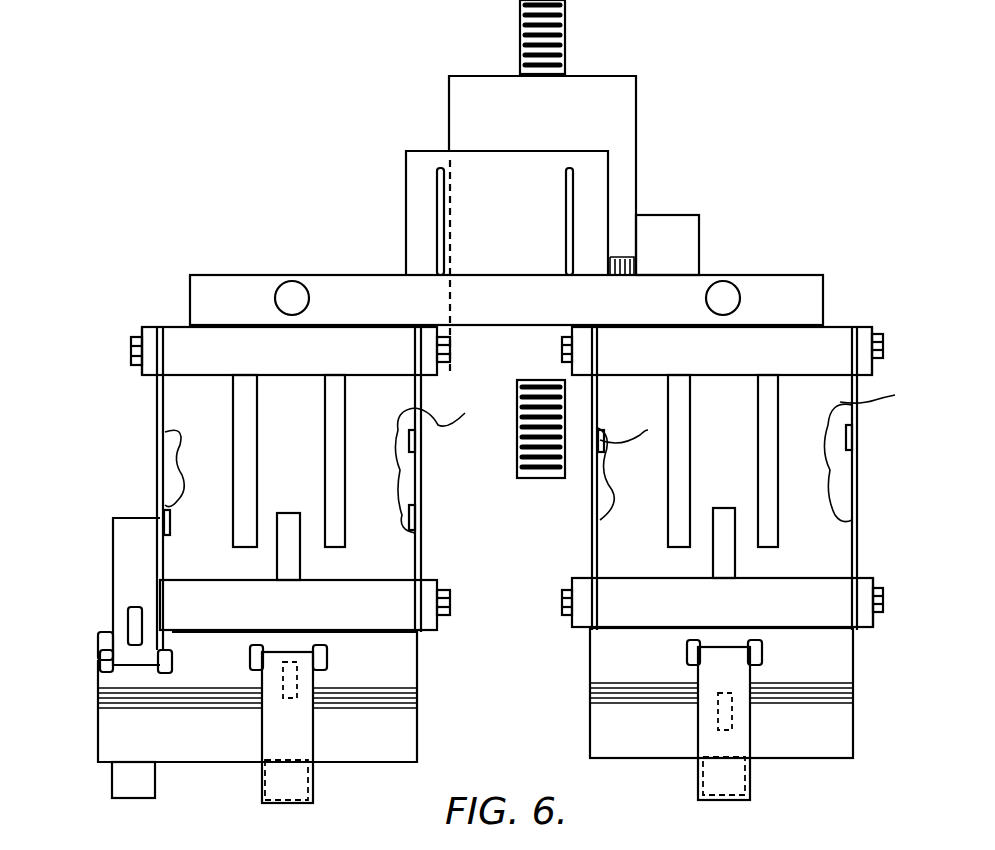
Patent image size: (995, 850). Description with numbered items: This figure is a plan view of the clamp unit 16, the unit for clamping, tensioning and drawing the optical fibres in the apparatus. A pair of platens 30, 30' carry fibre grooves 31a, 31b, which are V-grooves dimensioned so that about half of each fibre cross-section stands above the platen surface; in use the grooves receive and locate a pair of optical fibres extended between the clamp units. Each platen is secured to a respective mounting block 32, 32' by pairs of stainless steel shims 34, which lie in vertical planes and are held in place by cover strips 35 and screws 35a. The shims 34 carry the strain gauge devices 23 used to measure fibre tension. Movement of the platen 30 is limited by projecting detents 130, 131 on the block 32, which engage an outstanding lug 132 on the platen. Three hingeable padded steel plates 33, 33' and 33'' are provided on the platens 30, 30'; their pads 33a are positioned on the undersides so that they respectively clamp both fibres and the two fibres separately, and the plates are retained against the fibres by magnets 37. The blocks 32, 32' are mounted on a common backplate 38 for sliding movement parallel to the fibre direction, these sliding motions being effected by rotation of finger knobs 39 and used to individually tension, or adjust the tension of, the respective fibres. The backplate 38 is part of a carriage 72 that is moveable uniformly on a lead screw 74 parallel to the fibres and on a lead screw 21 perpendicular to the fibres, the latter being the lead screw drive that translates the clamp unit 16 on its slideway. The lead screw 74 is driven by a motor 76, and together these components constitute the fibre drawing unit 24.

The lead screw 21 is at (520, 25).
The carriage 72 is at (680, 172).
The lead screw 74 is at (618, 262).
The fibre drawing unit 24 is at (693, 203).
The motor 76 is at (641, 252).
The projecting detent 130 is at (248, 385).
The finger knob 39 is at (296, 290).
The backplate 38 is at (785, 282).
The mounting block 32 is at (268, 373).
The mounting block 32' is at (724, 312).
The cover strip 35 is at (150, 333).
The screw 35a is at (131, 350).
The stainless steel shim 34 is at (165, 478).
The hingeable padded steel plate 33 is at (106, 585).
The strain gauge device 23 is at (168, 522).
The pad 33a is at (128, 612).
The outstanding lug 132 is at (288, 513).
The projecting detent 131 is at (342, 505).
The fibre groove 31a is at (393, 690).
The fibre groove 31b is at (125, 708).
The platen 30 is at (286, 697).
The platen 30' is at (693, 693).
The clamp unit 16 is at (100, 783).
The magnet 37 is at (150, 780).
The hingeable padded steel plate 33' is at (315, 727).
The hingeable padded steel plate 33'' is at (690, 723).